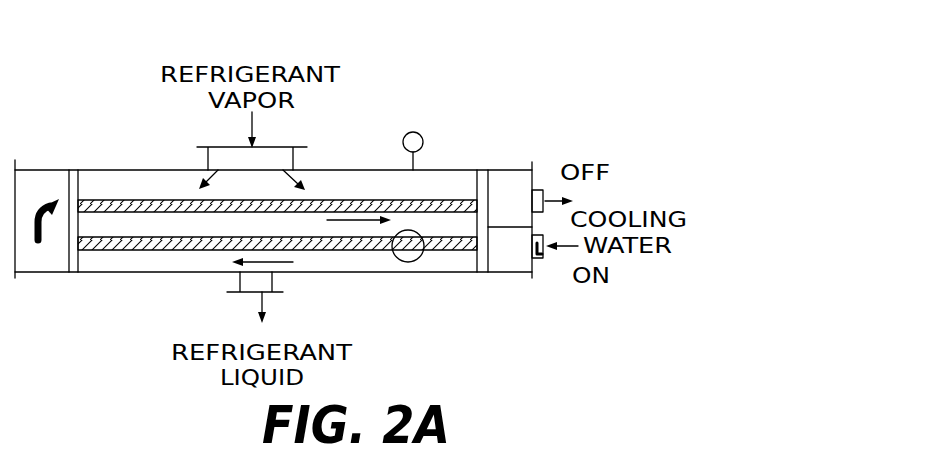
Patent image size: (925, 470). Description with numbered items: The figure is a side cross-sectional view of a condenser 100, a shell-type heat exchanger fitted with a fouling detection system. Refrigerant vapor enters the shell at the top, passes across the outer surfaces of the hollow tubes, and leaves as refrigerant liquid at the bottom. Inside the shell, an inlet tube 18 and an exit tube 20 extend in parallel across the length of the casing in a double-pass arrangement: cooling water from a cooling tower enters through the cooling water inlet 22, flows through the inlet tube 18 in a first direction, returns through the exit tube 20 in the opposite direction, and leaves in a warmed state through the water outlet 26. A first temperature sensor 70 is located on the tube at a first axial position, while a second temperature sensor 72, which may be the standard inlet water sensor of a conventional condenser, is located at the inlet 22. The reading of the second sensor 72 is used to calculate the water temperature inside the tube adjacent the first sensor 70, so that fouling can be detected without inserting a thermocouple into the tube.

The condenser 100 is at (140, 146).
The exit tube 20 is at (335, 208).
The inlet tube 18 is at (330, 250).
The first temperature sensor 70 is at (406, 262).
The cooling water inlet 22 is at (508, 265).
The water outlet 26 is at (513, 185).
The second temperature sensor 72 is at (538, 256).